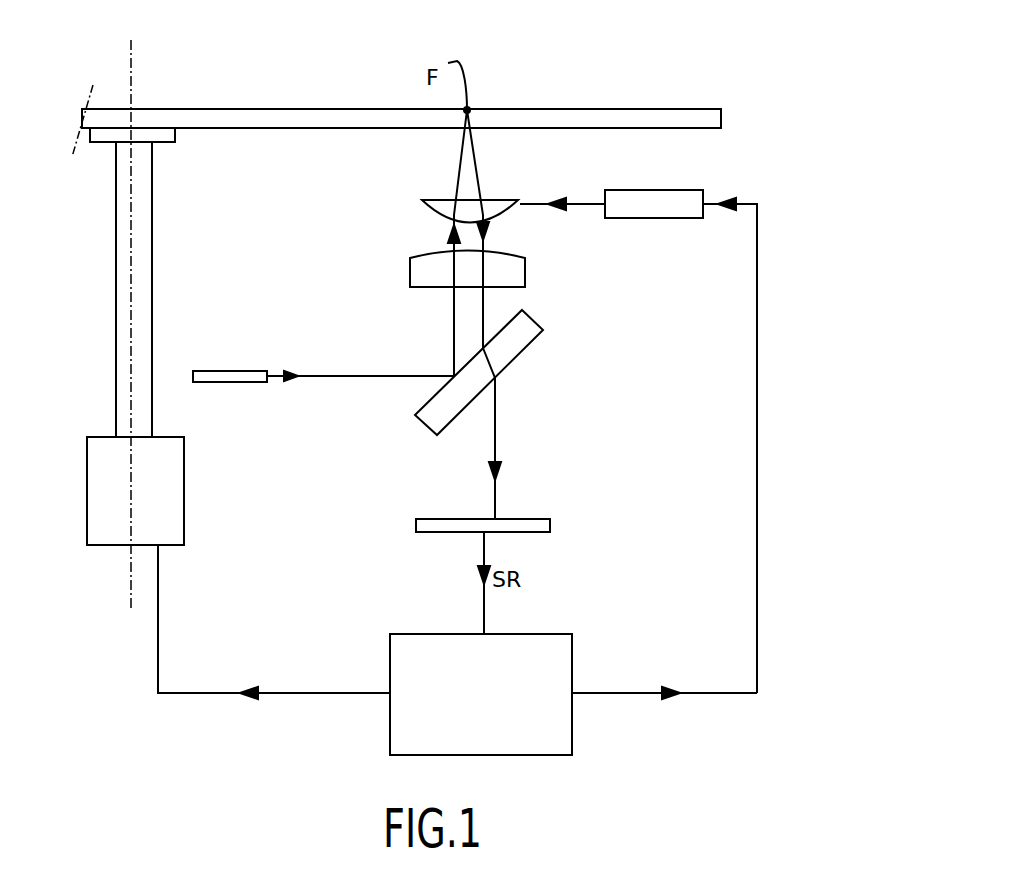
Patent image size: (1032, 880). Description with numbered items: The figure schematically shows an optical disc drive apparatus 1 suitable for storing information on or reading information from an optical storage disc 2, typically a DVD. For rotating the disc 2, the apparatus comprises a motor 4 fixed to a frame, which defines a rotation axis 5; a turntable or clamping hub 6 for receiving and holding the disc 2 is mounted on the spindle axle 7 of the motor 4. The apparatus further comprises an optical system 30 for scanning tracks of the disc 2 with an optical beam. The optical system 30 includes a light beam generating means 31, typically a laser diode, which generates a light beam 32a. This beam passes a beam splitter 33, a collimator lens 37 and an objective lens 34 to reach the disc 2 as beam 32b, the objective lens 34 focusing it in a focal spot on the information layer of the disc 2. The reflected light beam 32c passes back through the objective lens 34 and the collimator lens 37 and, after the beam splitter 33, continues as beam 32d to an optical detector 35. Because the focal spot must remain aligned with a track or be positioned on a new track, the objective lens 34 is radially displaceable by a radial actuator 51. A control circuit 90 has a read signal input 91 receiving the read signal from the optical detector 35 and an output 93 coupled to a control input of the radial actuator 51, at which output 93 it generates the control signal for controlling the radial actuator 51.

The optical disc drive apparatus 1 is at (655, 68).
The optical storage disc 2 is at (318, 108).
The motor 4 is at (141, 504).
The rotation axis 5 is at (135, 580).
The clamping hub 6 is at (100, 142).
The spindle axle 7 is at (115, 248).
The optical system 30 is at (280, 225).
The light beam generating means 31 is at (215, 370).
The light beam 32a is at (270, 372).
The light beam 32b is at (456, 178).
The reflected light beam 32c is at (480, 178).
The reflected light beam 32d is at (496, 450).
The beam splitter 33 is at (530, 345).
The objective lens 34 is at (432, 212).
The optical detector 35 is at (550, 524).
The collimator lens 37 is at (410, 272).
The radial actuator 51 is at (625, 218).
The control circuit 90 is at (494, 706).
The read signal input 91 is at (484, 652).
The output 93 is at (647, 686).